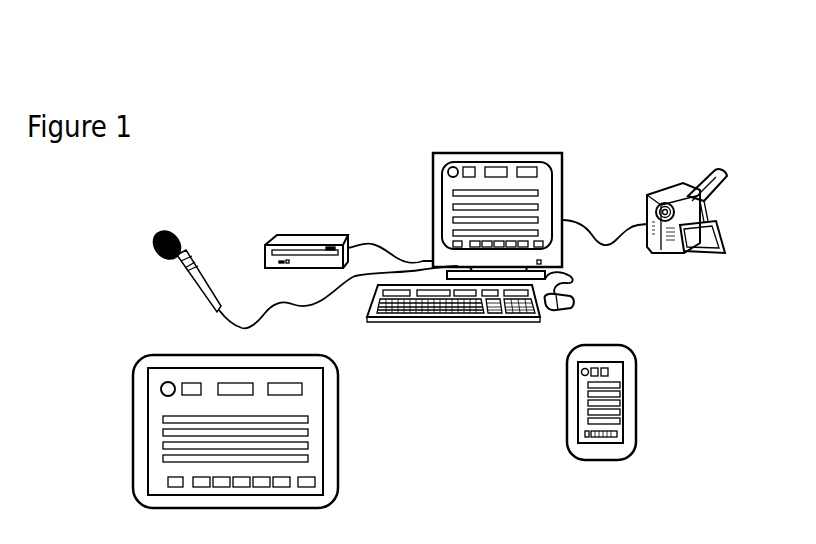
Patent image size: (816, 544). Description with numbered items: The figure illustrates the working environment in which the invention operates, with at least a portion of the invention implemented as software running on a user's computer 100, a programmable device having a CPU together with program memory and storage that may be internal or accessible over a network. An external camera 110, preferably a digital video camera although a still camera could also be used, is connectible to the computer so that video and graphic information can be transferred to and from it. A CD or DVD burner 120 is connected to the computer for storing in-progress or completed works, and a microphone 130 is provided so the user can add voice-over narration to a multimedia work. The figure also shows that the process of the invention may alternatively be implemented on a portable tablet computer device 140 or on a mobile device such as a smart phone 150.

The computer 100 is at (547, 153).
The camera 110 is at (708, 163).
The CD or DVD burner 120 is at (273, 240).
The microphone 130 is at (168, 228).
The portable tablet computer device 140 is at (340, 448).
The smart phone 150 is at (638, 437).